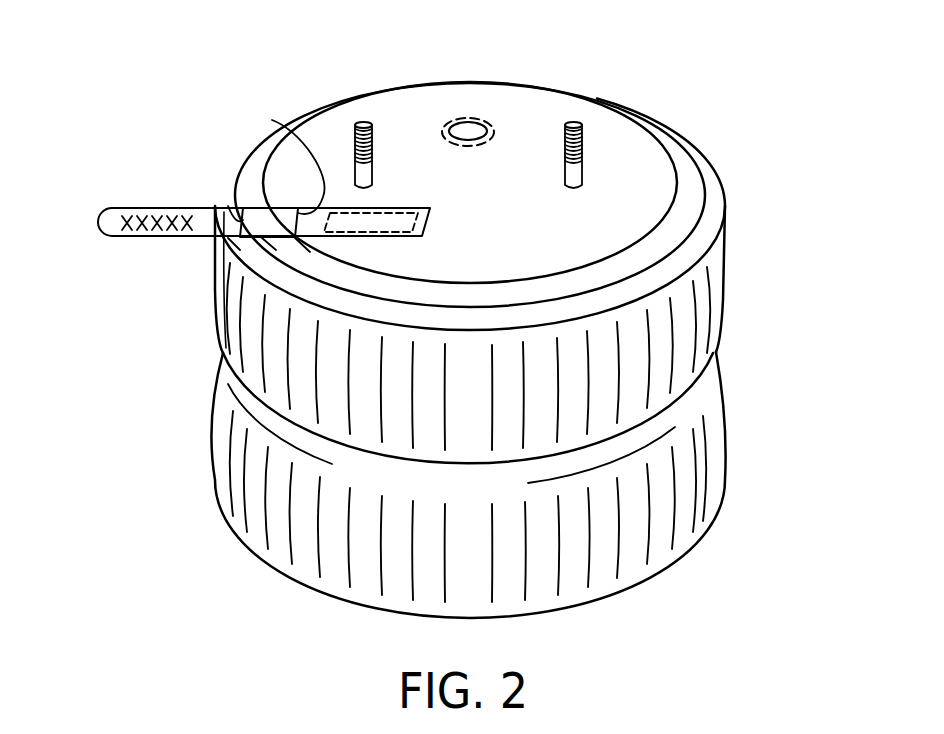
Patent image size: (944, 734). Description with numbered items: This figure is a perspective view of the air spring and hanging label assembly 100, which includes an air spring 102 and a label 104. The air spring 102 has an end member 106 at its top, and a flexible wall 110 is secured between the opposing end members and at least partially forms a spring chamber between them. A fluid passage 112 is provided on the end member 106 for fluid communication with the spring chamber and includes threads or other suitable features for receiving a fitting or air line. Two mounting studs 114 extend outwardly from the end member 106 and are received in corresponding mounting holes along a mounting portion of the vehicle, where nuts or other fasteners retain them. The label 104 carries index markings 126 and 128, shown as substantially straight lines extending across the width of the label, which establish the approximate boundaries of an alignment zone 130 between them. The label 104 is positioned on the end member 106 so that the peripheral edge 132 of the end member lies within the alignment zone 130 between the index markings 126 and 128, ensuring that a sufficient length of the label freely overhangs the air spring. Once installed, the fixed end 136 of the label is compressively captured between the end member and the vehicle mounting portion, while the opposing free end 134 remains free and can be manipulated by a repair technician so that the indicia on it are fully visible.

The air spring and hanging label assembly 100 is at (192, 156).
The air spring 102 is at (735, 194).
The label 104 is at (157, 253).
The end member 106 is at (632, 152).
The flexible wall 110 is at (723, 257).
The fluid passage 112 is at (471, 110).
The mounting studs 114 is at (341, 130).
The index marking 126 is at (228, 206).
The index marking 128 is at (264, 206).
The alignment zone 130 is at (254, 208).
The peripheral edge 132 is at (293, 262).
The free end 134 is at (128, 200).
The fixed end 136 is at (403, 198).